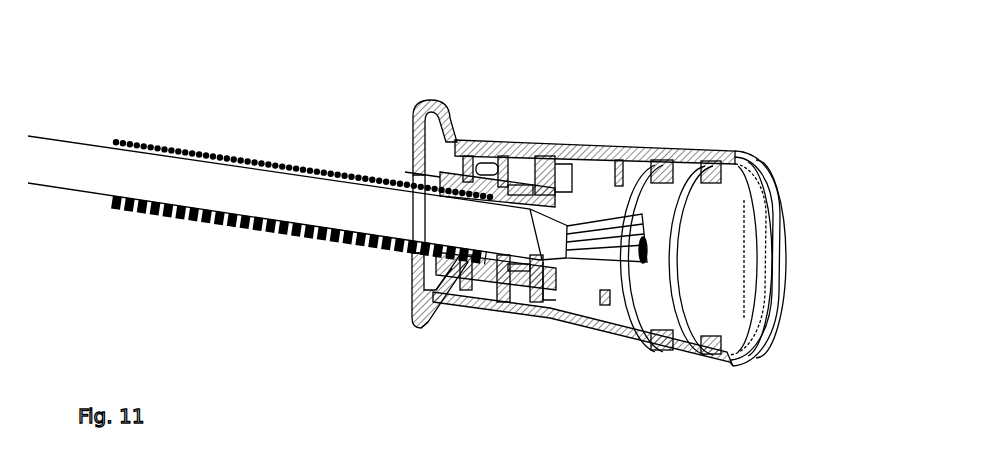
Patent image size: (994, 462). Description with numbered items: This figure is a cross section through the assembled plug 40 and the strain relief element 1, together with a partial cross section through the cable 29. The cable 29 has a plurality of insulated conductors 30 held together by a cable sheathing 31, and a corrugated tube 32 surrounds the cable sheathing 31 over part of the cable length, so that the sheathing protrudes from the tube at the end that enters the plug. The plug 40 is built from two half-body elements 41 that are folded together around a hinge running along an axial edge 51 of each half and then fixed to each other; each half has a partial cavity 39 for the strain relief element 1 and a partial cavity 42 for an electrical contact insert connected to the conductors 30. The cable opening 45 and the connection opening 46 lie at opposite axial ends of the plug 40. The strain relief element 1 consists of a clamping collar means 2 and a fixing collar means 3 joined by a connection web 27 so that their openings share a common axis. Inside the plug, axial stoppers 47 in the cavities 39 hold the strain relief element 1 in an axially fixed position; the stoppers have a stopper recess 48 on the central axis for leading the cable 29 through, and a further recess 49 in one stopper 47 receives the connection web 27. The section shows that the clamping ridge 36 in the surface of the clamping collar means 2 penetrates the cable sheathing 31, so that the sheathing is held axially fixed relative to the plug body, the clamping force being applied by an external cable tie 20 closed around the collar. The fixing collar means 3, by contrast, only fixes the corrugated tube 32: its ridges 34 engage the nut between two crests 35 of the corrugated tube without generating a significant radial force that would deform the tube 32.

The strain relief element 1 is at (416, 156).
The clamping collar means 2 is at (527, 172).
The fixing collar means 3 is at (433, 108).
The cable tie 20 is at (518, 270).
The connection web 27 is at (466, 163).
The cable 29 is at (190, 235).
The conductors 30 is at (594, 232).
The cable sheathing 31 is at (65, 168).
The corrugated tube 32 is at (238, 152).
The ridges 34 is at (428, 277).
The crests 35 is at (410, 267).
The clamping ridge 36 is at (541, 300).
The partial cavity for strain relief element 39 is at (536, 156).
The plug 40 is at (746, 127).
The half-body elements 41 is at (768, 190).
The partial cavity for electrical contact insert 42 is at (628, 205).
The cable opening 45 is at (408, 171).
The connection opening 46 is at (740, 254).
The axial stopper 47 is at (488, 293).
The stopper recess 48 is at (566, 192).
The recess 49 is at (494, 166).
The axial edge 51 is at (782, 229).